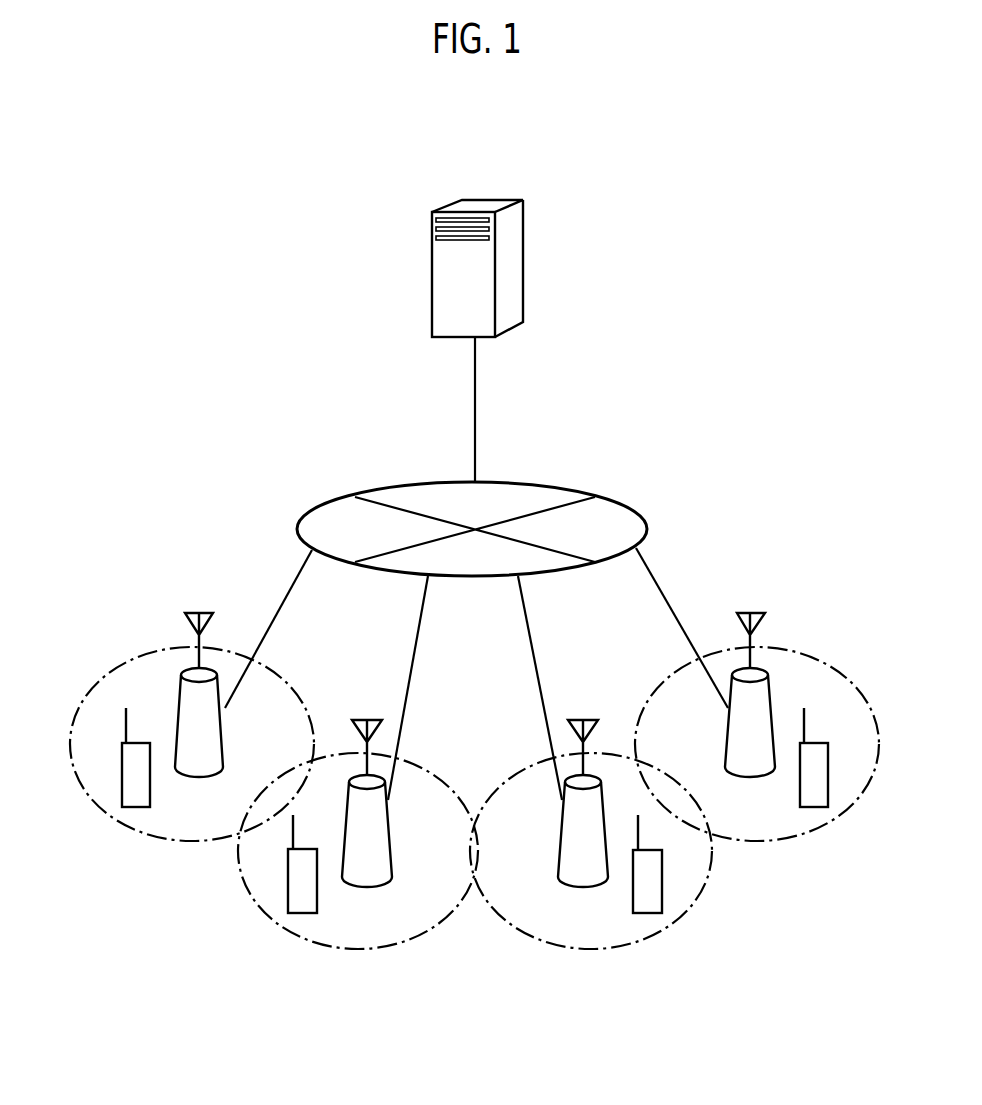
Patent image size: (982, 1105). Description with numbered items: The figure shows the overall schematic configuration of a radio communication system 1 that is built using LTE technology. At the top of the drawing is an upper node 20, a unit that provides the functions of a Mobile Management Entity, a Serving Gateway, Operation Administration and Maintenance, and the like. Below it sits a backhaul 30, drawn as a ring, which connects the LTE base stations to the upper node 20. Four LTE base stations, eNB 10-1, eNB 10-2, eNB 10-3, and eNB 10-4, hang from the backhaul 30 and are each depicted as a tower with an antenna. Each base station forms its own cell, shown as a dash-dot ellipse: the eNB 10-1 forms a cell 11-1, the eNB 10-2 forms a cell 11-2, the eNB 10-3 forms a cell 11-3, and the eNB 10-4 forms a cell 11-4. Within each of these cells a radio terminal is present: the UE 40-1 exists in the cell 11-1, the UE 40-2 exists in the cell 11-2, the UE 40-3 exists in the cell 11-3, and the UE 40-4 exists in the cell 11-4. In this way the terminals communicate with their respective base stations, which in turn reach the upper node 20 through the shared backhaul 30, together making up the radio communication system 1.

The radio communication system 1 is at (749, 141).
The upper node 20 is at (484, 200).
The backhaul 30 is at (385, 483).
The LTE base station (eNB) 10-1 is at (175, 707).
The LTE base station (eNB) 10-2 is at (372, 884).
The LTE base station (eNB) 10-3 is at (575, 885).
The LTE base station (eNB) 10-4 is at (773, 708).
The cell 11-1 is at (137, 838).
The cell 11-2 is at (302, 944).
The cell 11-3 is at (645, 943).
The cell 11-4 is at (812, 836).
The radio terminal (UE) 40-1 is at (122, 780).
The radio terminal (UE) 40-2 is at (288, 887).
The radio terminal (UE) 40-3 is at (662, 888).
The radio terminal (UE) 40-4 is at (828, 780).